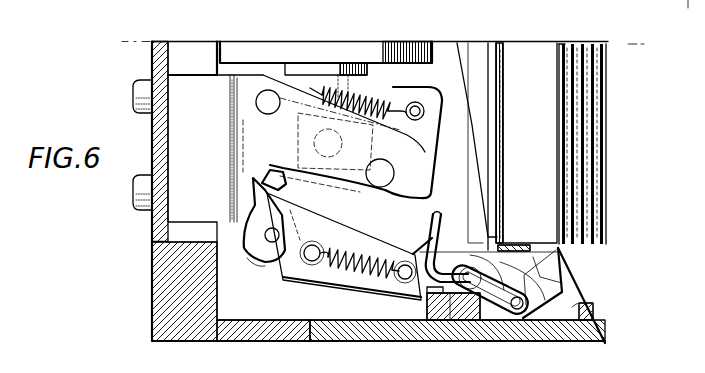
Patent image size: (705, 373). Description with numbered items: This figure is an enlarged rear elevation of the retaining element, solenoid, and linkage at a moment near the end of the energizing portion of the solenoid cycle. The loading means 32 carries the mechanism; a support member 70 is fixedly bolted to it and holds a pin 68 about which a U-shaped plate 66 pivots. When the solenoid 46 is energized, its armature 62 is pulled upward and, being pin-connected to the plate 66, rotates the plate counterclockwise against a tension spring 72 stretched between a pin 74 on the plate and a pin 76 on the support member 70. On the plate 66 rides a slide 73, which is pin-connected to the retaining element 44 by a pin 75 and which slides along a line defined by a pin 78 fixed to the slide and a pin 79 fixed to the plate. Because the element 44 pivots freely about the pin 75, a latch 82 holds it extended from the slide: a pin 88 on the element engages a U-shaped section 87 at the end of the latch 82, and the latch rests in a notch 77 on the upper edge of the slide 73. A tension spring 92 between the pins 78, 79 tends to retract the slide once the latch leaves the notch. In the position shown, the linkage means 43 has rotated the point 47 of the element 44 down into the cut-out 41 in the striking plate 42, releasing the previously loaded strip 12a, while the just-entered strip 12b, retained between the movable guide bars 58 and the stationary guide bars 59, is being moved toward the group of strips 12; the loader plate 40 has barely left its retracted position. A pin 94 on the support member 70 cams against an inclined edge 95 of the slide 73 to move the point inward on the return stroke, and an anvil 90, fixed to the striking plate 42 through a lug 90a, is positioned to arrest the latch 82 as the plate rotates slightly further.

The group of strips 12 is at (610, 95).
The previously loaded strip 12a is at (563, 60).
The strip 12b is at (498, 96).
The loading means 32 is at (146, 63).
The loader plate 40 is at (457, 50).
The cut-out 41 is at (592, 307).
The striking plate 42 is at (560, 250).
The linkage means 43 is at (254, 274).
The retaining element 44 is at (527, 305).
The solenoid 46 is at (338, 58).
The point 47 is at (558, 272).
The movable guide bars 58 is at (513, 56).
The stationary guide bars 59 is at (470, 200).
The armature 62 is at (283, 72).
The plate 66 is at (432, 141).
The pin 68 is at (384, 172).
The support member 70 is at (193, 78).
The tension spring 72 is at (378, 97).
The slide 73 is at (343, 283).
The pin 74 is at (421, 101).
The pin 75 is at (480, 278).
The pin 76 is at (262, 102).
The notch 77 is at (417, 230).
The pin 78 is at (392, 256).
The pin 79 is at (291, 278).
The latch 82 is at (445, 216).
The U-shaped section 87 is at (487, 300).
The pin 88 is at (565, 284).
The anvil 90 is at (410, 300).
The lug 90a is at (441, 322).
The tension spring 92 is at (330, 243).
The pin 94 is at (258, 238).
The inclined edge 95 is at (263, 207).